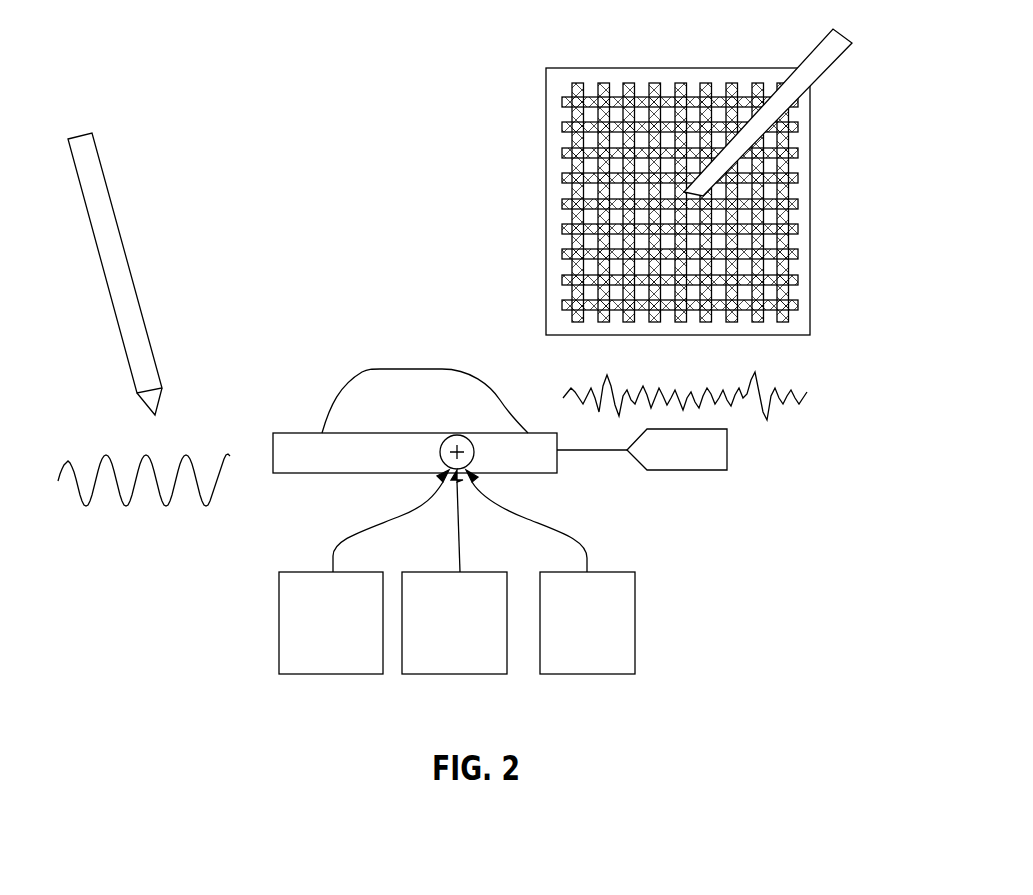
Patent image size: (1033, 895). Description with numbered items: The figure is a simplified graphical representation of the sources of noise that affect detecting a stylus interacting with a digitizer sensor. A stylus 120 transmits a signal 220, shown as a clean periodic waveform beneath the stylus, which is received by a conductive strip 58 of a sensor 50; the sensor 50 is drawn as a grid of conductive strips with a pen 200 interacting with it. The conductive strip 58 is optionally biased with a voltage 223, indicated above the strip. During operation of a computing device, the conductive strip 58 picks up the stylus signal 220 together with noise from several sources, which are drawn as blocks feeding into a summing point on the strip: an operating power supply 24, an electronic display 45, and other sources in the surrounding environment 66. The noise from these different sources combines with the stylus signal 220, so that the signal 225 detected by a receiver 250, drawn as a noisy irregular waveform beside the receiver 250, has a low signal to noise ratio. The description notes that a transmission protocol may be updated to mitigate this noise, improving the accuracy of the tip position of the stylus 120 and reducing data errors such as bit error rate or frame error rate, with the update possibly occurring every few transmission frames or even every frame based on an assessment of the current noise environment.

The stylus 120 is at (123, 243).
The signal 220 is at (170, 528).
The sensor 50 is at (540, 180).
The pen 200 is at (787, 110).
The conductive strip 58 is at (355, 433).
The voltage 223 is at (435, 369).
The receiver 250 is at (683, 470).
The signal 225 is at (763, 437).
The power supply 24 is at (320, 674).
The electronic display 45 is at (465, 674).
The surrounding environment 66 is at (590, 674).